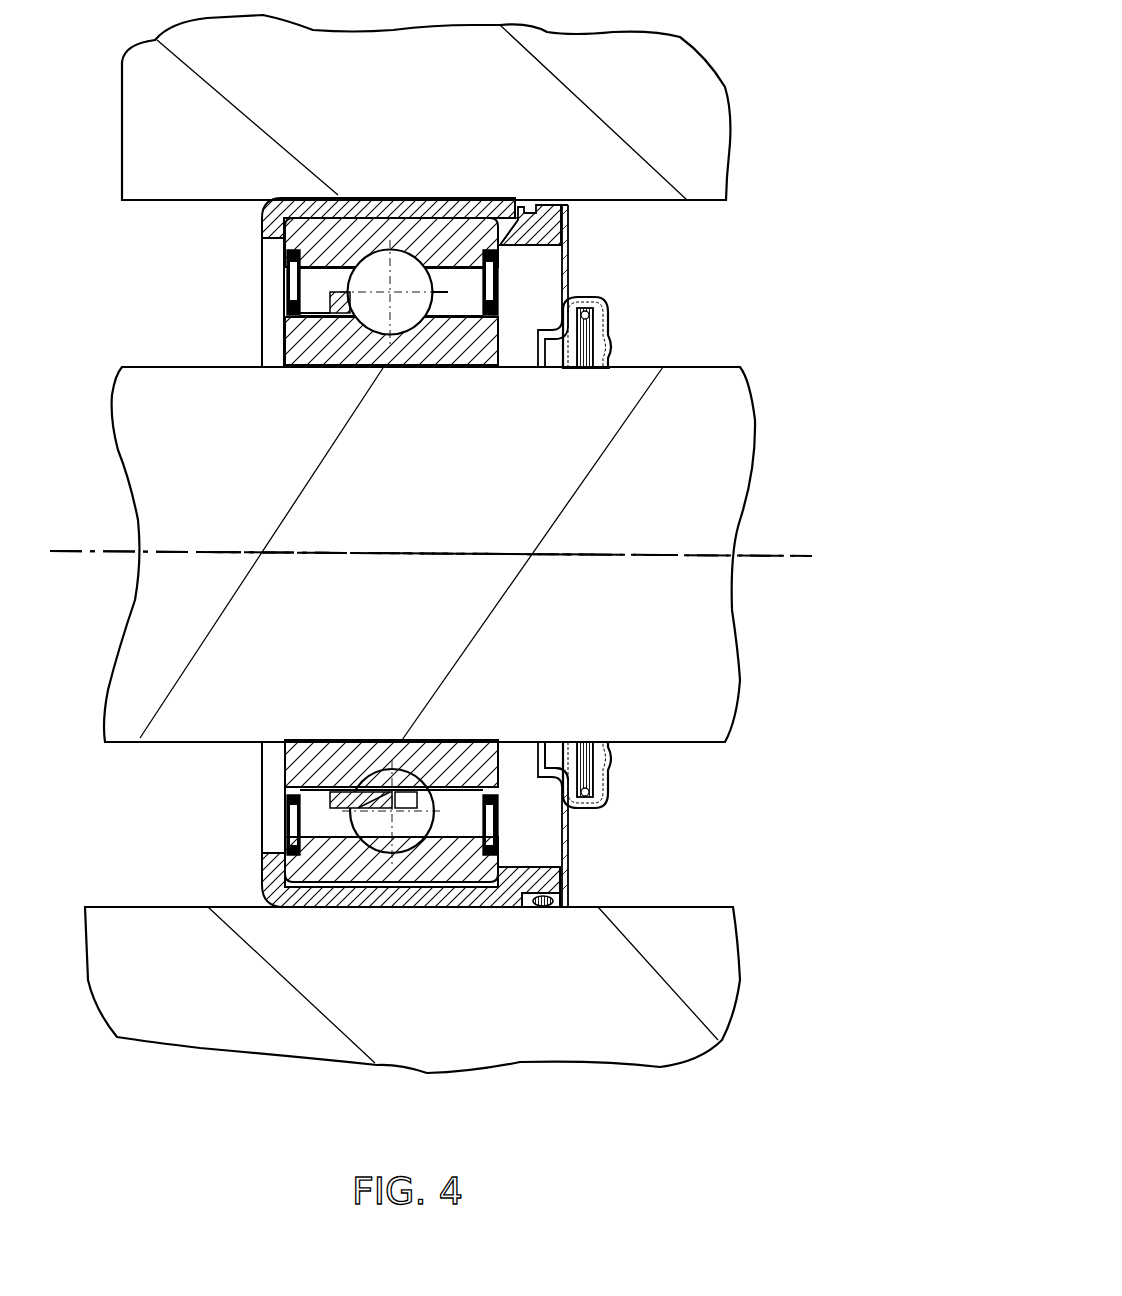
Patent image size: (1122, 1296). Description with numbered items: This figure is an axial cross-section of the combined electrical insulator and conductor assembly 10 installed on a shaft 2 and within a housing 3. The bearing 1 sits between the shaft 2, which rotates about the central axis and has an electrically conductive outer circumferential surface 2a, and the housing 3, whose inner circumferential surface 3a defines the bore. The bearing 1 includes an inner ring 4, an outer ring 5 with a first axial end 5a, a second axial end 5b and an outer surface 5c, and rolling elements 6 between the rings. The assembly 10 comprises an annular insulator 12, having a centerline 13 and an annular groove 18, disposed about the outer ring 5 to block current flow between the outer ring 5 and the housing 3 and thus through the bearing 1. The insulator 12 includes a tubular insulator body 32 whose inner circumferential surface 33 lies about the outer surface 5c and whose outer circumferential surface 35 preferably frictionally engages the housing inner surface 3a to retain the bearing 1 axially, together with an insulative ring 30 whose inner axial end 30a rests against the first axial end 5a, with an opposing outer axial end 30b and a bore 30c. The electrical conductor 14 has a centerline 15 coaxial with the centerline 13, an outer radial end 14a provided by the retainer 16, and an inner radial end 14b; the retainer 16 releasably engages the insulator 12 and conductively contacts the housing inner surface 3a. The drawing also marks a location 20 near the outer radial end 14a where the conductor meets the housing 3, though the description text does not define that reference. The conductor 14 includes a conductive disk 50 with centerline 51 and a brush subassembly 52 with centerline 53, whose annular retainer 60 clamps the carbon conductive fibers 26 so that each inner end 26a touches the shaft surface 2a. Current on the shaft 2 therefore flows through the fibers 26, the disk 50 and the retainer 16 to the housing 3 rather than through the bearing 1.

The bearing 1 is at (256, 797).
The shaft 2 is at (118, 382).
The outer circumferential surface 2a is at (132, 742).
The housing 3 is at (696, 80).
The inner circumferential surface 3a is at (160, 200).
The inner ring 4 is at (336, 738).
The outer ring 5 is at (424, 888).
The first axial end 5a is at (562, 875).
The second axial end 5b is at (285, 863).
The outer surface 5c is at (370, 907).
The rolling elements 6 is at (407, 776).
The combined electrical insulator and conductor assembly 10 is at (256, 152).
The annular insulator 12 is at (324, 190).
The centerline 13 is at (800, 555).
The electrical conductor 14 is at (630, 840).
The outer radial end 14a is at (558, 915).
The inner radial end 14b is at (588, 373).
The centerline 15 is at (225, 552).
The retainer 16 is at (540, 914).
The annular groove 18 is at (545, 207).
The contact point 20 is at (566, 910).
The conductive fibers 26 is at (558, 762).
The inner end 26a is at (574, 370).
The insulative ring 30 is at (543, 198).
The inner axial end 30a is at (499, 250).
The outer axial end 30b is at (563, 238).
The bore 30c is at (556, 246).
The tubular insulator body 32 is at (428, 193).
The inner circumferential surface 33 is at (437, 230).
The outer circumferential surface 35 is at (352, 198).
The conductive disk 50 is at (580, 826).
The centerline 51 is at (606, 554).
The brush subassembly 52 is at (622, 781).
The centerline 53 is at (400, 553).
The annular retainer 60 is at (604, 297).